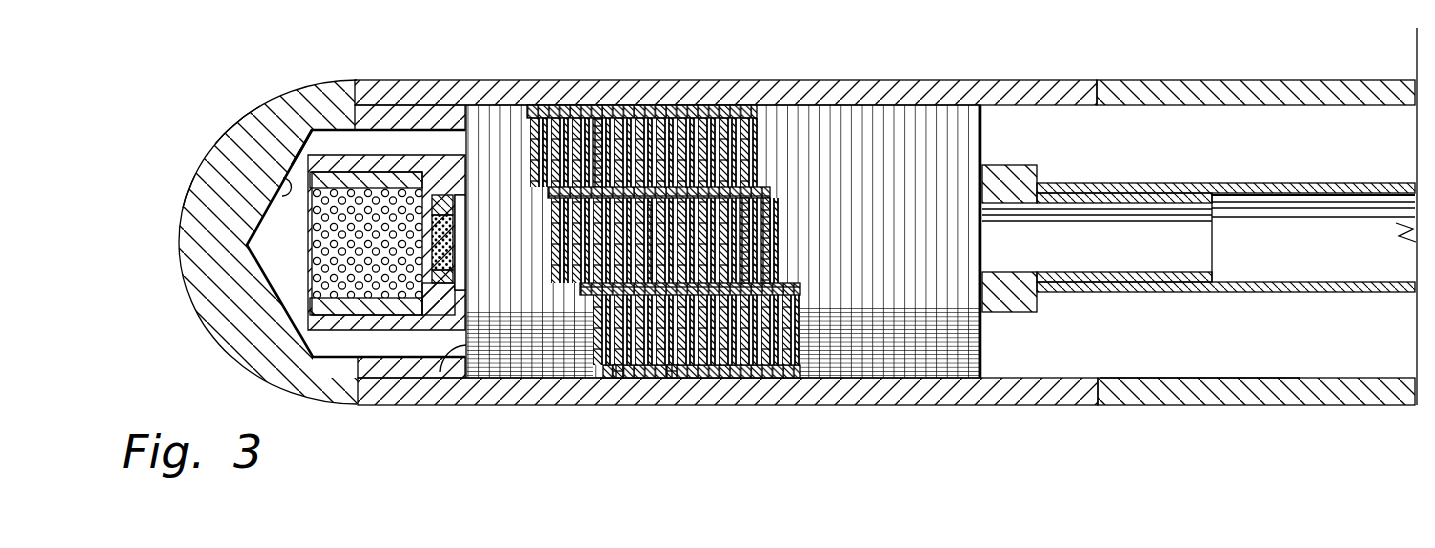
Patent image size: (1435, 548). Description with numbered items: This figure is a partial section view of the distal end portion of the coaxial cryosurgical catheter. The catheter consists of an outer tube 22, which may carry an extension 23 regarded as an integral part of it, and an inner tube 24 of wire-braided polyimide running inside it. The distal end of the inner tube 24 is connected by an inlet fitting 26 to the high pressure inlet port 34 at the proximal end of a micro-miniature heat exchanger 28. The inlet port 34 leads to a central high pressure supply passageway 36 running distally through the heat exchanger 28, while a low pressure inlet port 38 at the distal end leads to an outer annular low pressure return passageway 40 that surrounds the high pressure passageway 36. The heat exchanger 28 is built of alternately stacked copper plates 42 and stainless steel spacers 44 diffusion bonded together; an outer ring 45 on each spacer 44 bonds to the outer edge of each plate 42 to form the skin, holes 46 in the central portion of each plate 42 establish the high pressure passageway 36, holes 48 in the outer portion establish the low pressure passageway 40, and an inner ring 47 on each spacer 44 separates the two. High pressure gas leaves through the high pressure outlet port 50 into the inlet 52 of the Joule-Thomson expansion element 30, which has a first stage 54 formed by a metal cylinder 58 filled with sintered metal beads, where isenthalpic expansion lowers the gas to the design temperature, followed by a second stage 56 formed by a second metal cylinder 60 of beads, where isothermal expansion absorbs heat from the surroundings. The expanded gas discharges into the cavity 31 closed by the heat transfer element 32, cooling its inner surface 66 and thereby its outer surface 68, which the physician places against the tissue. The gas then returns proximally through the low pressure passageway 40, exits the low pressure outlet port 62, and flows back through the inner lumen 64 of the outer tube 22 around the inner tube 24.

The outer tube 22 is at (1215, 76).
The extension 23 is at (1013, 398).
The inner tube 24 is at (1300, 180).
The inlet fitting 26 is at (1040, 300).
The micro-miniature heat exchanger 28 is at (872, 117).
The Joule-Thomson expansion element 30 is at (343, 158).
The cavity 31 is at (270, 221).
The heat transfer element 32 is at (192, 268).
The high pressure inlet port 34 is at (982, 250).
The high pressure supply passageway 36 is at (650, 213).
The low pressure inlet port 38 is at (448, 300).
The low pressure return passageway 40 is at (778, 372).
The copper plates 42 is at (620, 370).
The stainless steel spacers 44 is at (600, 140).
The outer ring 45 is at (675, 370).
The holes 46 is at (748, 240).
The inner ring 47 is at (765, 207).
The holes 48 is at (702, 122).
The high pressure outlet port 50 is at (434, 197).
The inlet 52 is at (464, 232).
The first stage 54 is at (405, 170).
The second stage 56 is at (297, 148).
The metal cylinder 58 is at (445, 285).
The second metal cylinder 60 is at (320, 305).
The low pressure outlet port 62 is at (982, 135).
The inner lumen 64 is at (1200, 348).
The inner surface 66 is at (248, 143).
The outer surface 68 is at (192, 176).